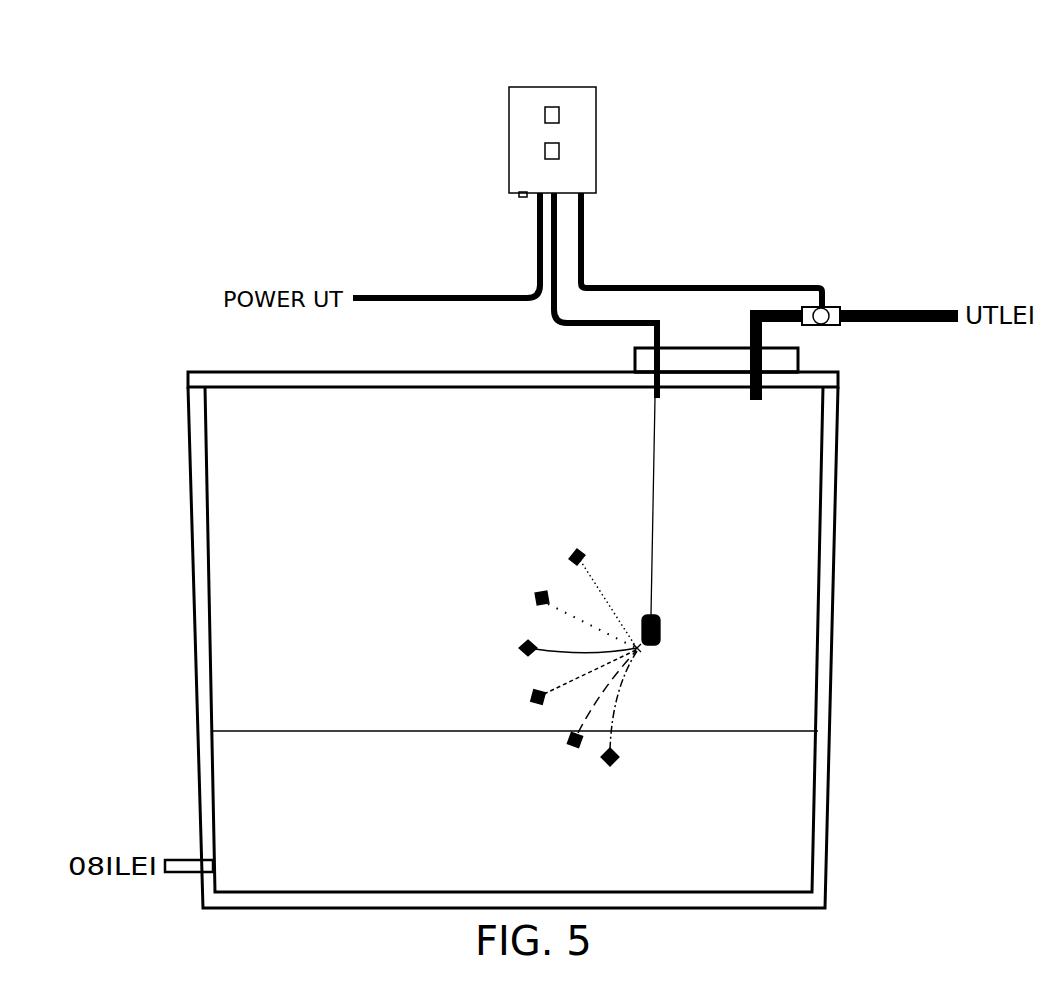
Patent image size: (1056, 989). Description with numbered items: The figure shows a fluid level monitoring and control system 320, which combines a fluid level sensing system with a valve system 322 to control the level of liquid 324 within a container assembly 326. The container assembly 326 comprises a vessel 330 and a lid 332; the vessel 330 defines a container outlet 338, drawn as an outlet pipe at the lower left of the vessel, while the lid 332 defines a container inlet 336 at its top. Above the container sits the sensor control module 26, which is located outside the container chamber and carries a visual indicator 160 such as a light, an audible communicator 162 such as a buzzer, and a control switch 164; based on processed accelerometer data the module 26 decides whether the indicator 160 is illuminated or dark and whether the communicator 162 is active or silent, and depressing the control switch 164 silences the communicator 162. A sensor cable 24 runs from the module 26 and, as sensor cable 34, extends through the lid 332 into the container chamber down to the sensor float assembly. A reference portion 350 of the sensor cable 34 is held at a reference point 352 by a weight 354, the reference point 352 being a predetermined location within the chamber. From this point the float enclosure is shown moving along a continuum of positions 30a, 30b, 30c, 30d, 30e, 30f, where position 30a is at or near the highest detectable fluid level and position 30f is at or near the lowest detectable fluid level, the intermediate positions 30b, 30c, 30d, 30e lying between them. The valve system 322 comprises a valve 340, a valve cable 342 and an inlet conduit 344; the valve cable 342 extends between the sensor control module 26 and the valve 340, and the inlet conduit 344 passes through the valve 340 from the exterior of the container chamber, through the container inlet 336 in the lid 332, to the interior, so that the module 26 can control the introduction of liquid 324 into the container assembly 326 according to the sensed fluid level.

The sensor cable 24 is at (531, 658).
The sensor control module 26 is at (585, 121).
The float enclosure position 30a is at (570, 553).
The float enclosure position 30b is at (534, 596).
The float enclosure position 30c is at (520, 645).
The float enclosure position 30d is at (530, 698).
The float enclosure position 30e is at (568, 746).
The float enclosure position 30f is at (608, 767).
The sensor cable 34 is at (562, 322).
The visual indicator 160 is at (553, 106).
The audible communicator 162 is at (518, 197).
The control switch 164 is at (545, 151).
The fluid level monitoring and control system 320 is at (946, 193).
The valve system 322 is at (830, 292).
The liquid 324 is at (245, 741).
The container assembly 326 is at (838, 497).
The vessel 330 is at (828, 615).
The lid 332 is at (355, 380).
The container inlet 336 is at (738, 393).
The container outlet 338 is at (168, 858).
The valve 340 is at (845, 310).
The valve cable 342 is at (690, 287).
The inlet conduit 344 is at (763, 405).
The reference portion 350 is at (667, 635).
The reference point 352 is at (644, 653).
The weight 354 is at (662, 623).